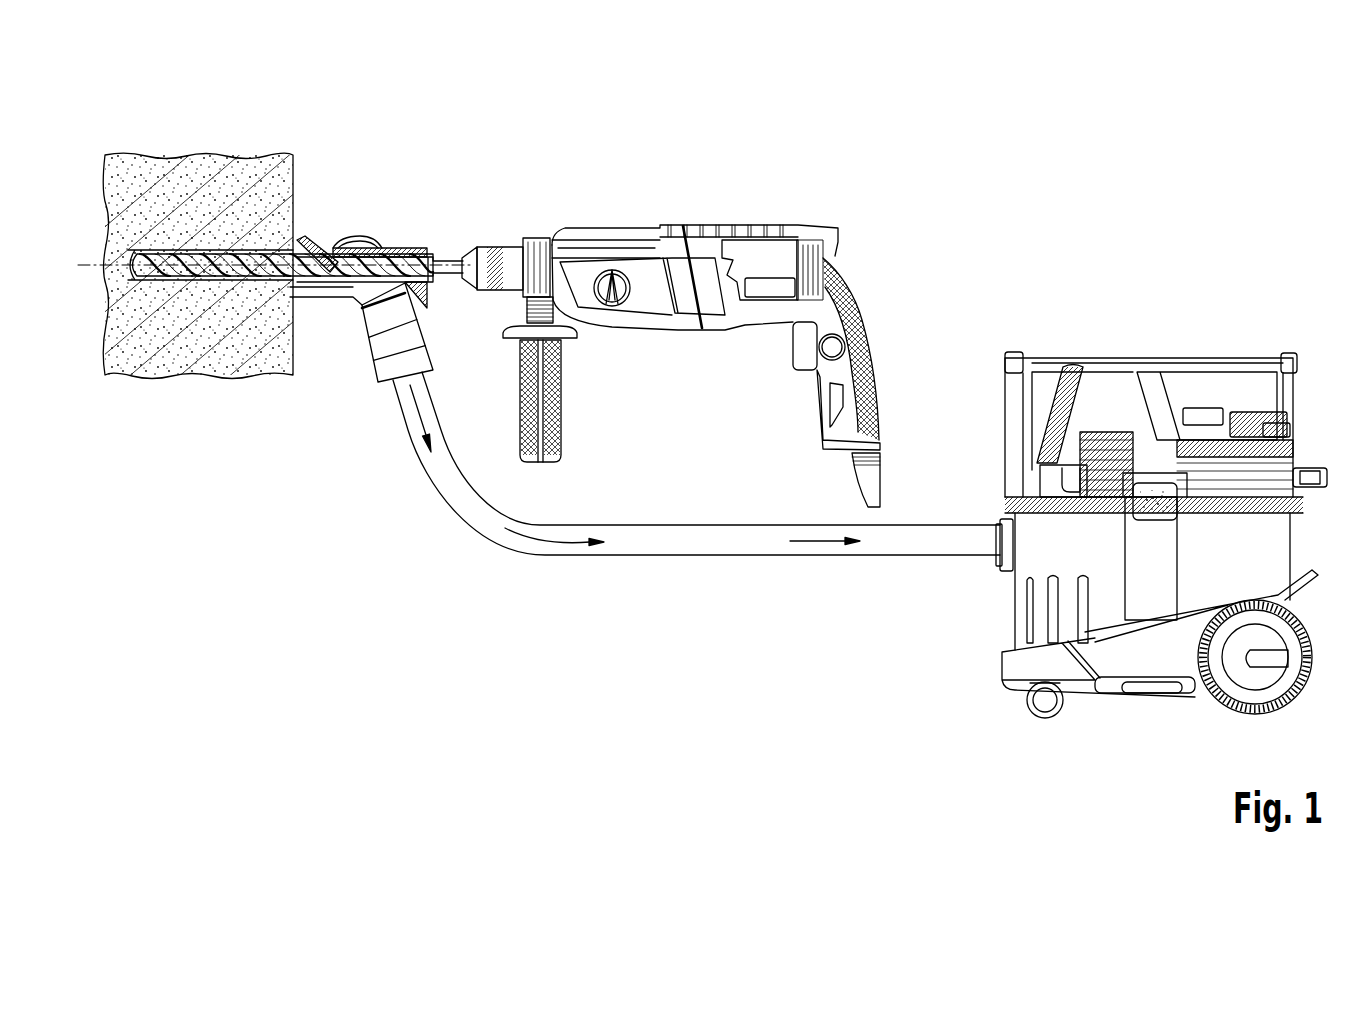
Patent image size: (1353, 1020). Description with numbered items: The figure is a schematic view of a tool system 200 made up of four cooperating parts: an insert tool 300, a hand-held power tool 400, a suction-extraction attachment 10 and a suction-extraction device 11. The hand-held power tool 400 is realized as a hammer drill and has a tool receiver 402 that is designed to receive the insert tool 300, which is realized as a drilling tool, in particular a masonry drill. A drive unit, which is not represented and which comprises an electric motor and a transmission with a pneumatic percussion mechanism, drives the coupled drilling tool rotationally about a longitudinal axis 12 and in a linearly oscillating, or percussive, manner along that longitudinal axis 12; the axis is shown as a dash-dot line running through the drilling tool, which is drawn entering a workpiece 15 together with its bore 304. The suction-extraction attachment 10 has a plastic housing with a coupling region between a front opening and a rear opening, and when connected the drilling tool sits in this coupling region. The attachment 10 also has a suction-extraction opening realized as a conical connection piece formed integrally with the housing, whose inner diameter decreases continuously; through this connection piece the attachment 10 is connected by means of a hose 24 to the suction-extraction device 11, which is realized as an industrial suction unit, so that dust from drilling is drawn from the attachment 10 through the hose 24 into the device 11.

The suction-extraction attachment 10 is at (363, 207).
The suction-extraction device 11 is at (1138, 335).
The longitudinal axis 12 is at (99, 262).
The workpiece wall 15 is at (205, 180).
The hose 24 is at (661, 557).
The tool system 200 is at (770, 117).
The insert tool 300 is at (316, 234).
The drill bit 304 is at (139, 189).
The hand-held power tool 400 is at (671, 317).
The tool receiver 402 is at (494, 217).